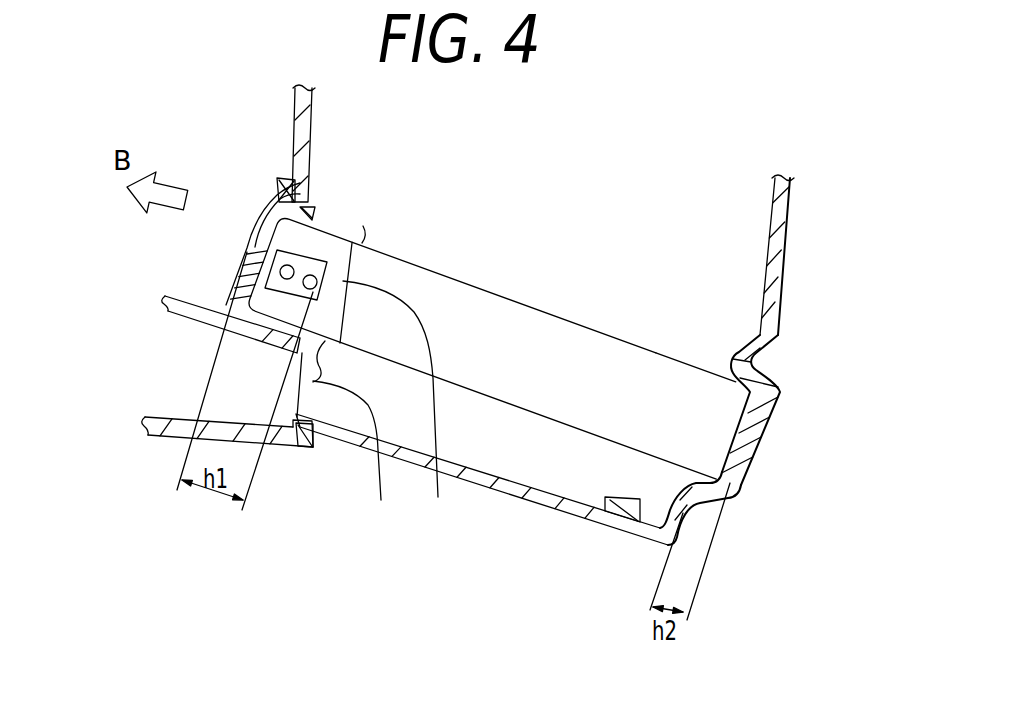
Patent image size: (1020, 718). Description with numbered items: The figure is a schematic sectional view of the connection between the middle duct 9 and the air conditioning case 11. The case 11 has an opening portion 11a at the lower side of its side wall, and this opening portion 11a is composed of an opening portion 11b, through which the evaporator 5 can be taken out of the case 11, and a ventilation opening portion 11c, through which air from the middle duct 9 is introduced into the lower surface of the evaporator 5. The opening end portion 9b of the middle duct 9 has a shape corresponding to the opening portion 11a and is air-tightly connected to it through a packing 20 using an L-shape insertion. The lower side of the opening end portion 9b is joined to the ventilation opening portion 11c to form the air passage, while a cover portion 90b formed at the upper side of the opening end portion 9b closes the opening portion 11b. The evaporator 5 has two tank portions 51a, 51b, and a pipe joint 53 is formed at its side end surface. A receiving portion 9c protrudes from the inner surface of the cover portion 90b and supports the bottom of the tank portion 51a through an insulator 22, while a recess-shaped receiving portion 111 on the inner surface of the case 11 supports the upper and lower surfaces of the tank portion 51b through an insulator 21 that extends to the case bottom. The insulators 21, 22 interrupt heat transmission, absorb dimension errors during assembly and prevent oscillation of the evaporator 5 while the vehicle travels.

The evaporator 5 is at (518, 303).
The tank portion 51a is at (302, 240).
The tank portion 51b is at (733, 398).
The pipe joint 53 is at (328, 265).
The cover portion 90b is at (247, 240).
The insulator 22 is at (257, 270).
The packing 20 is at (293, 181).
The middle duct 9 is at (167, 438).
The opening end portion 9b is at (280, 437).
The receiving portion 9c is at (262, 338).
The air conditioning case 11 is at (783, 300).
The insulator 21 is at (743, 433).
The receiving portion 111 is at (717, 513).
The opening portion 11a is at (480, 532).
The opening portion 11b is at (399, 381).
The ventilation opening portion 11c is at (354, 438).